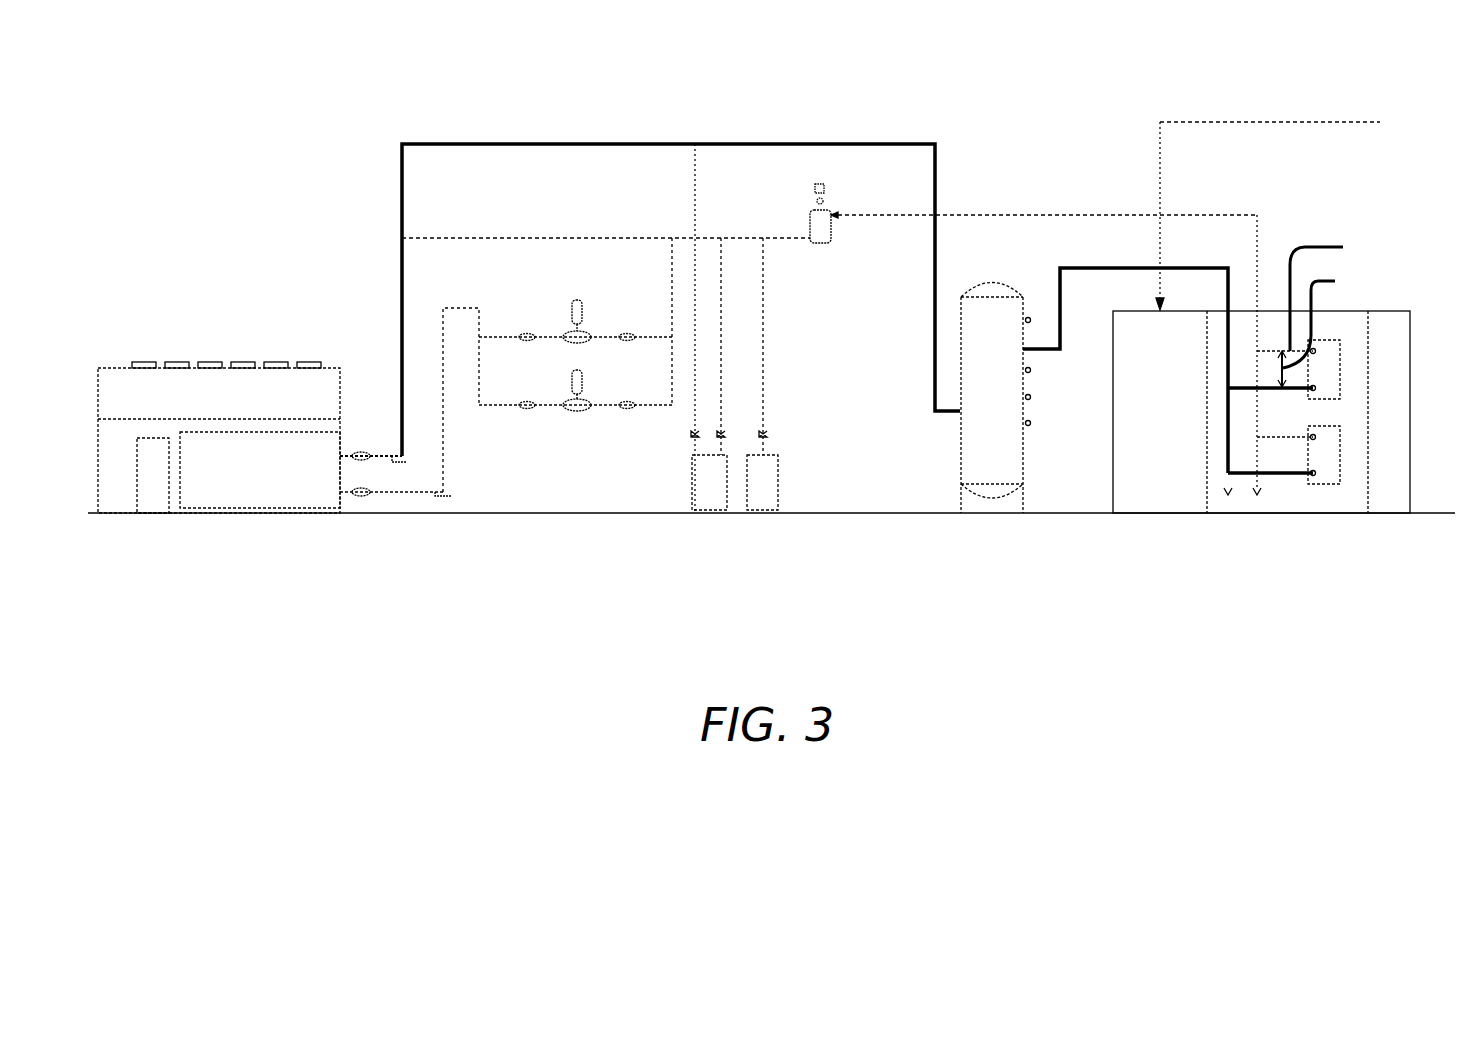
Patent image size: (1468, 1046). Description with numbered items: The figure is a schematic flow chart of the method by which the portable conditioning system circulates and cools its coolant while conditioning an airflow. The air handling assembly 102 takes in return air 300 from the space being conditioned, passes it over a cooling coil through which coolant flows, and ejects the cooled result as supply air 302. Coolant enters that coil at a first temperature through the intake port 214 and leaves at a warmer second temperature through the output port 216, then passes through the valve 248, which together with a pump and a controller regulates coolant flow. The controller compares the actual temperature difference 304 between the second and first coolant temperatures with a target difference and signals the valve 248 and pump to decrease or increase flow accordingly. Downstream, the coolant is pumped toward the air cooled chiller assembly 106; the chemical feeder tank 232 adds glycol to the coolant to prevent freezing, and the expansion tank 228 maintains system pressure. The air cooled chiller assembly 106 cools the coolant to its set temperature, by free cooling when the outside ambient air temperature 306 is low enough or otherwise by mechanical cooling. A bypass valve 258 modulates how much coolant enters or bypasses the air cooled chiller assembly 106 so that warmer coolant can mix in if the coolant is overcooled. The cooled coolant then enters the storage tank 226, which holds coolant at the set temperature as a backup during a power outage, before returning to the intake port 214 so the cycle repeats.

The air handling assembly 102 is at (1288, 365).
The air cooled chiller assembly 106 is at (385, 383).
The intake port 214 is at (1290, 473).
The output port 216 is at (832, 243).
The storage tank 226 is at (962, 470).
The expansion tank 228 is at (765, 513).
The chemical feeder tank 232 is at (712, 513).
The valve 248 is at (1340, 295).
The bypass valve 258 is at (497, 238).
The return air 300 is at (1268, 122).
The supply air 302 is at (1382, 413).
The actual temperature difference 304 is at (1333, 319).
The outside ambient air temperature 306 is at (219, 420).